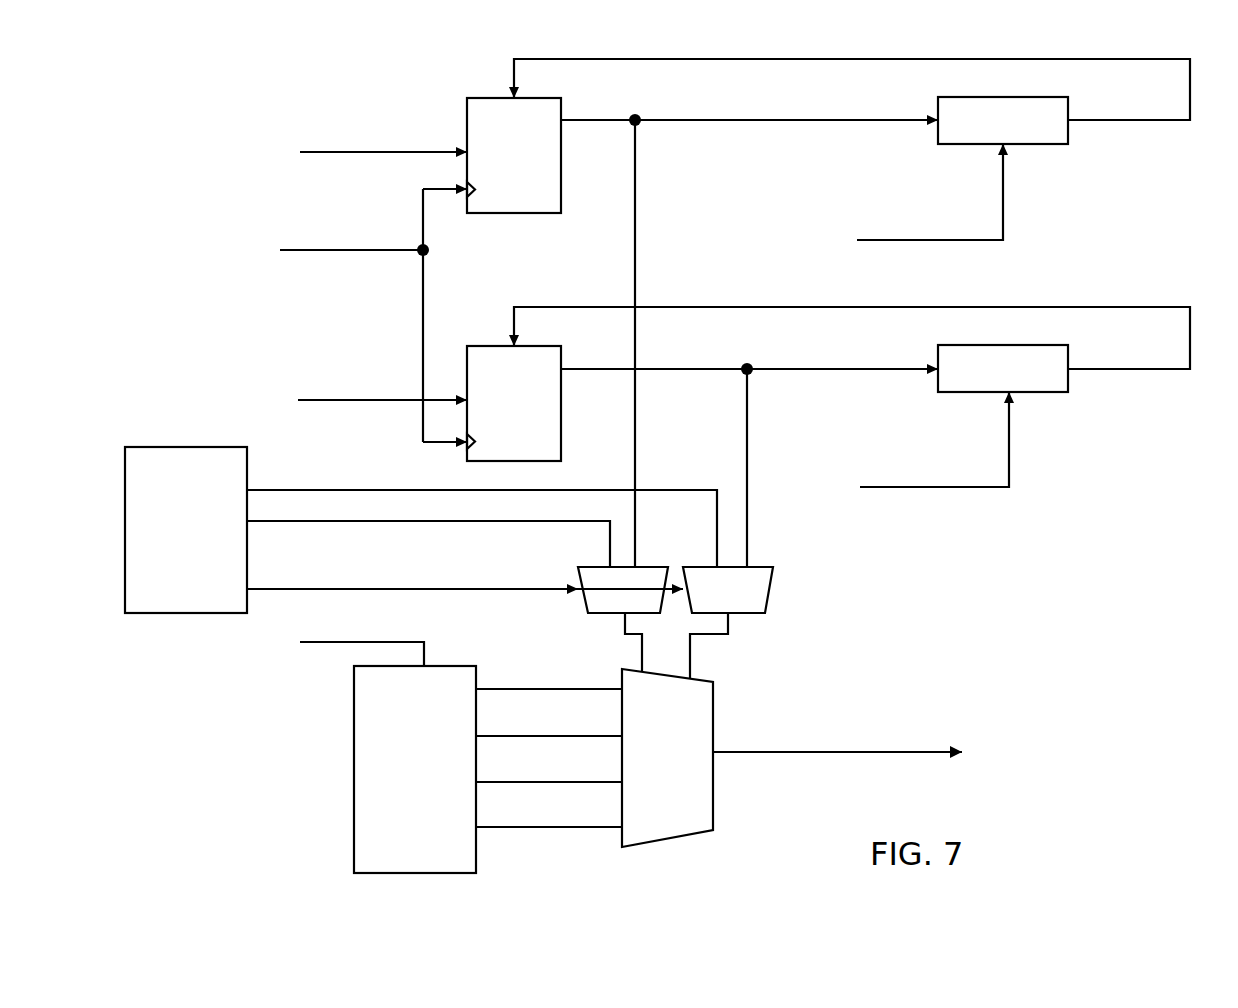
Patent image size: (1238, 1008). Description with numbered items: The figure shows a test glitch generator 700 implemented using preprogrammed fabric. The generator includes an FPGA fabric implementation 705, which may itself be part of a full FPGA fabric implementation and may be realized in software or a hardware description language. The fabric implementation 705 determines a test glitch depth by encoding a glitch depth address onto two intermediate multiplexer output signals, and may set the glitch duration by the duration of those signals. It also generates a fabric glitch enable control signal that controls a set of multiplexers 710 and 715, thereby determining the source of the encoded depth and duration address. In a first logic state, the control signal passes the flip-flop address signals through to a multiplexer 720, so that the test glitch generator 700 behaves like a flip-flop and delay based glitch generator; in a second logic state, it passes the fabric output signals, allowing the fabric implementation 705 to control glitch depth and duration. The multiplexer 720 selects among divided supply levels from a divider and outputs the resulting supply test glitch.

The test glitch generator 700 is at (208, 98).
The fabric implementation 705 is at (186, 530).
The multiplexer 710 is at (583, 603).
The multiplexer 715 is at (768, 597).
The multiplexer 720 is at (713, 797).